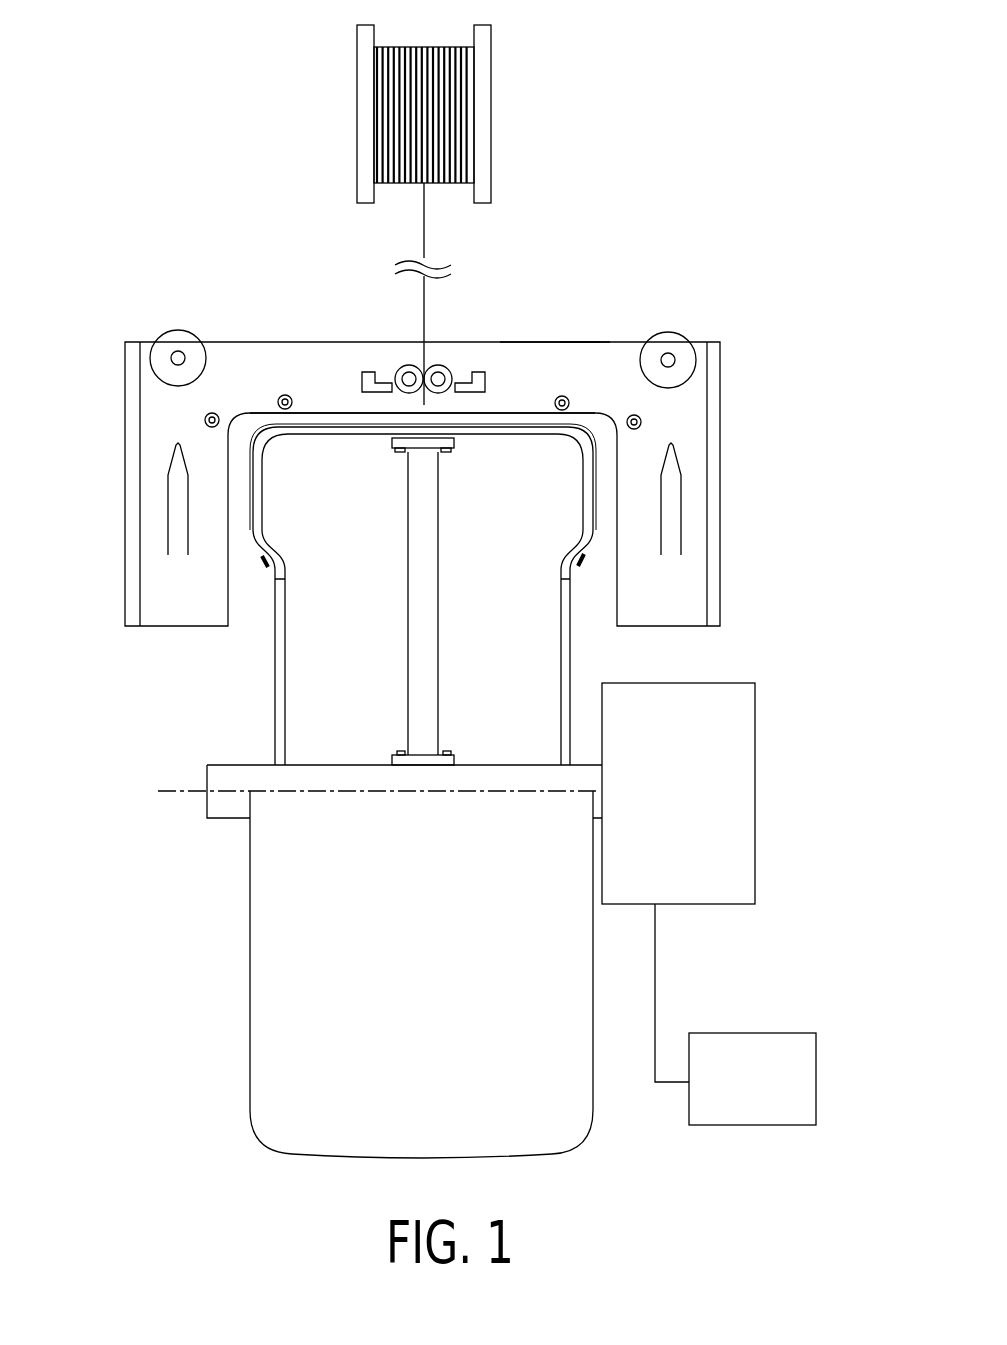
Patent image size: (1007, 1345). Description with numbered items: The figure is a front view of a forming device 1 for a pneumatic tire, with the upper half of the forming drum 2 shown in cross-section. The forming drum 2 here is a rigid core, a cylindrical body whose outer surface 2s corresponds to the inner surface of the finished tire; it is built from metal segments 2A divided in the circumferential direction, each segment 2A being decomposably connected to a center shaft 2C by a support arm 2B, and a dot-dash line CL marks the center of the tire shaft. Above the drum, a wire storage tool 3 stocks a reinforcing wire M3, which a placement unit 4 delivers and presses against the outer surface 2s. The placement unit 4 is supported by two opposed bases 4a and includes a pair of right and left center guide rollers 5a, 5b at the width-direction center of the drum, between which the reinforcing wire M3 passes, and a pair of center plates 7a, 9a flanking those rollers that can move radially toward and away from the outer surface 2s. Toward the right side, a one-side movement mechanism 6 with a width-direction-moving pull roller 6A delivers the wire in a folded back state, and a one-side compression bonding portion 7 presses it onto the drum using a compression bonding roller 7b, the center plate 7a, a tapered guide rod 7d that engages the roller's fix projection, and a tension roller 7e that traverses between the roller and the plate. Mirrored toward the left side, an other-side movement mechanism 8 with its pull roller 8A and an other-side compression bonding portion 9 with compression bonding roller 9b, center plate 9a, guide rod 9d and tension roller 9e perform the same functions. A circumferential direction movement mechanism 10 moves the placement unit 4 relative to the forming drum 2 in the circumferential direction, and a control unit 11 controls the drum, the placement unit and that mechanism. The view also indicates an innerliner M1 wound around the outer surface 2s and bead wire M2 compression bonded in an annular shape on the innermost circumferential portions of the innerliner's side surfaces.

The forming device 1 is at (607, 148).
The forming drum 2 is at (275, 672).
The segment 2A is at (350, 437).
The support arm 2B is at (423, 640).
The center shaft 2C is at (494, 775).
The outer surface 2s is at (355, 428).
The wire storage tool 3 is at (362, 128).
The placement unit 4 is at (502, 288).
The base 4a is at (540, 344).
The center guide roller 5a is at (446, 365).
The center guide roller 5b is at (401, 365).
The one-side movement mechanism 6 is at (590, 342).
The pull roller 6A is at (562, 396).
The one-side compression bonding portion 7 is at (692, 308).
The center plate 7a is at (480, 372).
The compression bonding roller 7b is at (670, 346).
The guide rod 7d is at (672, 502).
The tension roller 7e is at (641, 420).
The other-side movement mechanism 8 is at (257, 342).
The pull roller 8A is at (285, 395).
The other-side compression bonding portion 9 is at (155, 305).
The center plate 9a is at (368, 372).
The compression bonding roller 9b is at (176, 345).
The guide rod 9d is at (178, 500).
The tension roller 9e is at (205, 418).
The circumferential direction movement mechanism 10 is at (690, 690).
The control unit 11 is at (753, 1045).
The innerliner M1 is at (272, 995).
The bead wire M2 is at (578, 568).
The reinforcing wire M3 is at (424, 252).
The center of tire shaft CL is at (360, 793).